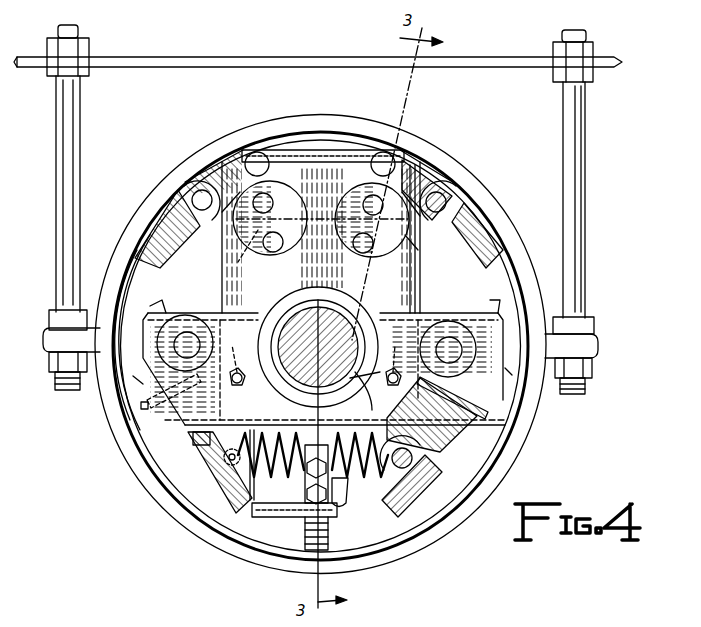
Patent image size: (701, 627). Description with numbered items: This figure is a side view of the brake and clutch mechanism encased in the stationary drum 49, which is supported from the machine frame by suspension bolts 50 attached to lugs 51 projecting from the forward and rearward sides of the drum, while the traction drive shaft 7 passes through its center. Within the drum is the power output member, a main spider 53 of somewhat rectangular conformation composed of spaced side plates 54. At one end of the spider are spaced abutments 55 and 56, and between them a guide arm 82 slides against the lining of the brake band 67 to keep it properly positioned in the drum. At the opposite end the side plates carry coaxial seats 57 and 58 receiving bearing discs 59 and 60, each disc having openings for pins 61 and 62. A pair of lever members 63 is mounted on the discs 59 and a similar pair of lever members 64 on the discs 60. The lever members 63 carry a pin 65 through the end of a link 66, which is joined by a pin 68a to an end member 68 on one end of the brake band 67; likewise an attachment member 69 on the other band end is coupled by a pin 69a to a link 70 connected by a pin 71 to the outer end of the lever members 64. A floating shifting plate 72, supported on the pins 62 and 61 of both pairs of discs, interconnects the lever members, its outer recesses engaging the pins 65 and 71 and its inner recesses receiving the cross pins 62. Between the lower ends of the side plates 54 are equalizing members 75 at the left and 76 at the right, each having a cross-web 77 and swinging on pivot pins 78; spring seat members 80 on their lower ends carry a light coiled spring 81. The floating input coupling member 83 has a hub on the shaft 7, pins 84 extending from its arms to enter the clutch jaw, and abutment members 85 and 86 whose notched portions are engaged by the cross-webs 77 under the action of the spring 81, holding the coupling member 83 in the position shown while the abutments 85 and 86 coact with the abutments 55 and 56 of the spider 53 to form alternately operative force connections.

The traction drive shaft 7 is at (365, 396).
The stationary drum 49 is at (137, 195).
The suspension bolts 50 is at (80, 120).
The lugs 51 is at (43, 340).
The main spider 53 is at (426, 283).
The side plates 54 is at (410, 303).
The abutment 55 is at (226, 497).
The abutment 56 is at (414, 486).
The seats 57 is at (252, 253).
The seats 58 is at (321, 263).
The bearing discs 59 is at (238, 237).
The bearing discs 60 is at (403, 240).
The pin 61 is at (274, 250).
The pin 62 is at (372, 205).
The lever members 63 is at (230, 262).
The lever members 64 is at (402, 175).
The pin 65 is at (262, 152).
The link 66 is at (224, 170).
The brake band 67 is at (172, 478).
The end member 68 is at (148, 245).
The pin 68a is at (193, 192).
The attachment member 69 is at (472, 232).
The pin 69a is at (445, 200).
The link 70 is at (425, 185).
The pin 71 is at (383, 152).
The floating shifting plate 72 is at (338, 162).
The equalizing member 75 is at (196, 428).
The equalizing member 76 is at (440, 428).
The cross-web 77 is at (185, 380).
The pivot pins 78 is at (312, 358).
The spring seat members 80 is at (222, 452).
The coiled spring 81 is at (313, 490).
The guide arm 82 is at (304, 525).
The input coupling member 83 is at (280, 317).
The pins 84 is at (186, 338).
The abutment member 85 is at (133, 378).
The abutment member 86 is at (512, 372).